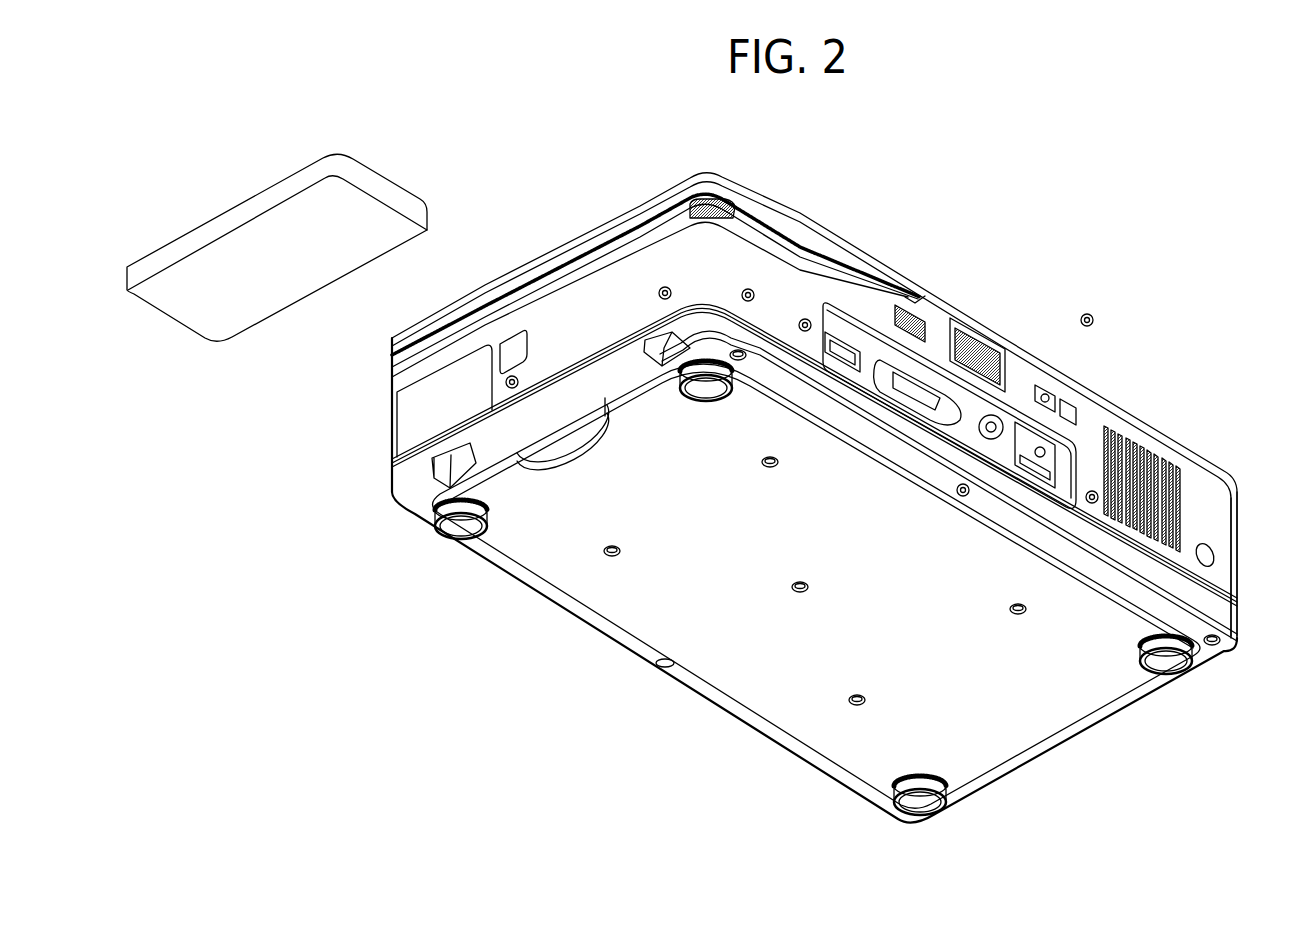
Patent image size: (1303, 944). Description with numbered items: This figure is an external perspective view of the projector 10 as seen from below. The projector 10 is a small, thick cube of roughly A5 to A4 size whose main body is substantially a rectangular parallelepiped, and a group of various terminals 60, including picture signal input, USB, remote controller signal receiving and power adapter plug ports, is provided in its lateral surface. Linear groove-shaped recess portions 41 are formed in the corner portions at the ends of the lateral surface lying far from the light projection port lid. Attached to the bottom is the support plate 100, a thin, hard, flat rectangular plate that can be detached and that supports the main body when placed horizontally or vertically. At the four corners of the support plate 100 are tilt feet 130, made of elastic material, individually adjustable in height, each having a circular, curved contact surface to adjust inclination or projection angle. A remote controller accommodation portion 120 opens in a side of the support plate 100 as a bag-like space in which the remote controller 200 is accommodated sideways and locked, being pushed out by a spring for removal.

The projector 10 is at (1060, 248).
The linear groove-shaped recess portion 41 is at (1240, 560).
The group of various terminals 60 is at (1030, 370).
The support plate 100 is at (756, 657).
The remote controller accommodation portion 120 is at (568, 433).
The tilt foot 130 is at (708, 385).
The remote controller 200 is at (252, 247).